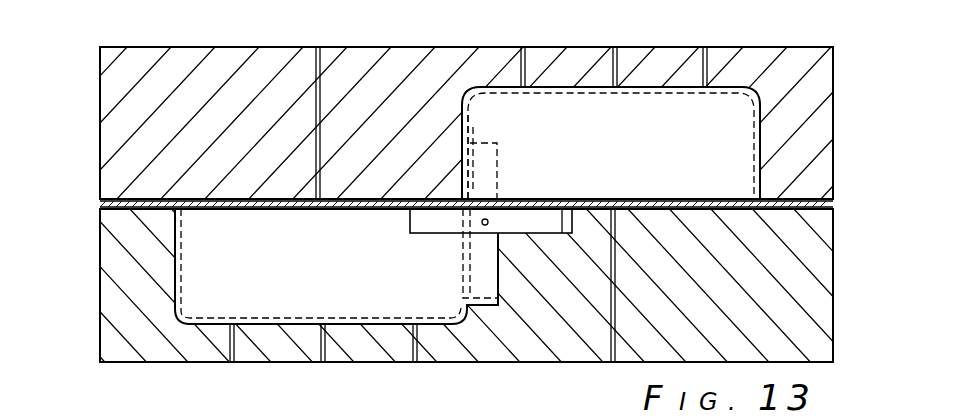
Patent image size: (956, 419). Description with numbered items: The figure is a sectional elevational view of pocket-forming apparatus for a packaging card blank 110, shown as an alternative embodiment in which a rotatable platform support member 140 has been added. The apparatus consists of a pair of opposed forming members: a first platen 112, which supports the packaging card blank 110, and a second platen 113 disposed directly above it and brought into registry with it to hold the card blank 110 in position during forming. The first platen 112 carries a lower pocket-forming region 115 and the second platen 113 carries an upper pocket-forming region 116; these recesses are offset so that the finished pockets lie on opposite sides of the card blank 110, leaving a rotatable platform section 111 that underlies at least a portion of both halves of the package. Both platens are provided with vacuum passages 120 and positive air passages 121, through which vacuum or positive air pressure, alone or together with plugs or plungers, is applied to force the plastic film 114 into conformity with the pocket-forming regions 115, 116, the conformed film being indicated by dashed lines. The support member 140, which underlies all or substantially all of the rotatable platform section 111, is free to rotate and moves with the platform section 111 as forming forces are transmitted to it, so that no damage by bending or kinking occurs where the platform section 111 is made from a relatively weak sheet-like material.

The packaging card blank 110 is at (103, 203).
The rotatable platform section 111 is at (473, 123).
The first platen 112 is at (808, 287).
The second platen 113 is at (118, 98).
The plastic film 114 is at (755, 163).
The lower pocket-forming region 115 is at (320, 286).
The upper pocket-forming region 116 is at (648, 148).
The vacuum passages 120 is at (703, 63).
The positive air passages 121 is at (318, 50).
The rotatable platform support member 140 is at (447, 222).